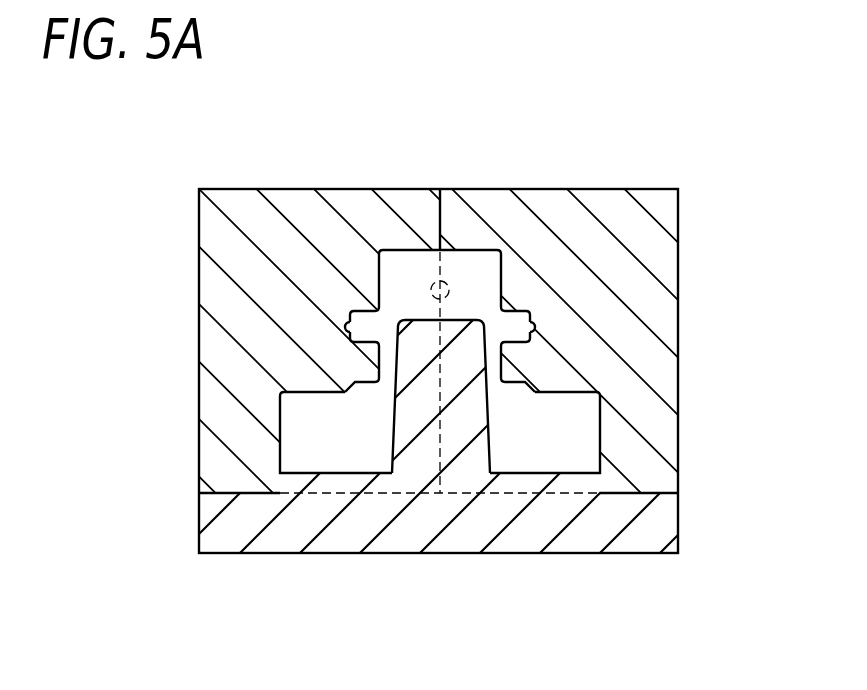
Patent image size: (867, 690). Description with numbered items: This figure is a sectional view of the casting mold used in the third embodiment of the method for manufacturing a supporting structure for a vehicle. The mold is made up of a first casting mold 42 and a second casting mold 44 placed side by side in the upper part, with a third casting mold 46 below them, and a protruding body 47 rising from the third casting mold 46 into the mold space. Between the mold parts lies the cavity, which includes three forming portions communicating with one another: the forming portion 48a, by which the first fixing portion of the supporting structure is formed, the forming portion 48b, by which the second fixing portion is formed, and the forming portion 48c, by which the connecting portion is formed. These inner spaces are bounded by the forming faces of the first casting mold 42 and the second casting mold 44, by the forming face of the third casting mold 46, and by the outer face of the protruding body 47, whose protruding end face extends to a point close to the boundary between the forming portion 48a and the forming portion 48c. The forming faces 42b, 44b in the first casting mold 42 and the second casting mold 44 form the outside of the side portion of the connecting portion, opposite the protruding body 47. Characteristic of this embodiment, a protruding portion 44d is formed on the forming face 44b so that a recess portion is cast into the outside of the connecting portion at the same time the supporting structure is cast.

The first casting mold 42 is at (667, 236).
The forming face 42b is at (537, 332).
The second casting mold 44 is at (245, 202).
The forming face 44b is at (349, 333).
The protruding portion 44d is at (372, 360).
The third casting mold 46 is at (455, 537).
The protruding body 47 is at (412, 407).
The forming portion 48a is at (465, 265).
The forming portion 48b is at (580, 445).
The forming portion 48c is at (388, 340).